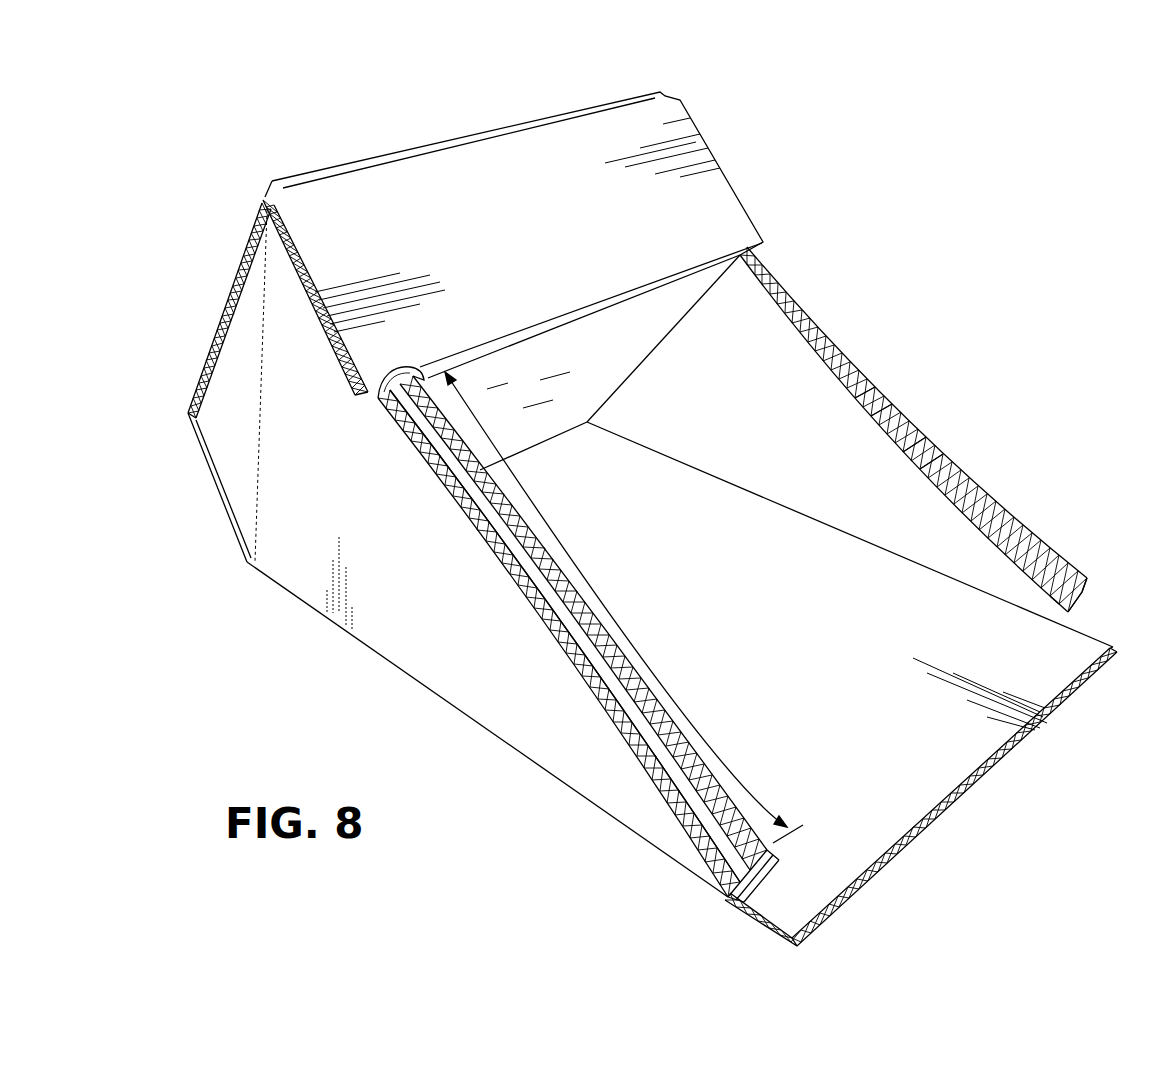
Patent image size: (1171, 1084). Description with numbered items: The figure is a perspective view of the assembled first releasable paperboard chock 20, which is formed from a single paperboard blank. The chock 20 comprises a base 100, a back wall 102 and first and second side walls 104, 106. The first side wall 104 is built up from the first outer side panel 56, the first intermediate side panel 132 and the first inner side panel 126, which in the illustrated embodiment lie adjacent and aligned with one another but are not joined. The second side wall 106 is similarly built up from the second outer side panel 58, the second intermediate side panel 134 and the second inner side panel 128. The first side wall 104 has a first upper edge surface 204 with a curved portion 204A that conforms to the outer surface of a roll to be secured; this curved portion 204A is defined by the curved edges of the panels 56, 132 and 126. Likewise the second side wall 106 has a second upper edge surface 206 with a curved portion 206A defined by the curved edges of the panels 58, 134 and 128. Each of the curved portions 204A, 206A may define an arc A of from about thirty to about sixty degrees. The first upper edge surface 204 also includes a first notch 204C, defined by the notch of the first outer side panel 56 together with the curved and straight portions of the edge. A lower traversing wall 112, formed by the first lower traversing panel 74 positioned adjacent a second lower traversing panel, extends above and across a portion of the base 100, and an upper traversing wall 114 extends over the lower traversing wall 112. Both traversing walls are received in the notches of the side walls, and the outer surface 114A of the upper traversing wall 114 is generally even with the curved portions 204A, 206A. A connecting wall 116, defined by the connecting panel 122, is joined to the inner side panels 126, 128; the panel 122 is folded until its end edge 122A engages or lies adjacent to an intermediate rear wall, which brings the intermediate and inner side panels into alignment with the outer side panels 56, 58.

The first releasable paperboard chock 20 is at (1057, 492).
The first outer side panel 56 is at (592, 768).
The second outer side panel 58 is at (807, 307).
The first lower traversing panel 74 is at (310, 303).
The base 100 is at (963, 747).
The back wall 102 is at (227, 450).
The first side wall 104 is at (613, 833).
The second side wall 106 is at (927, 397).
The lower traversing wall 112 is at (333, 340).
The upper traversing wall 114 is at (678, 140).
The outer surface of the upper traversing wall 114A is at (497, 175).
The connecting wall 116 is at (650, 310).
The connecting panel 122 is at (560, 360).
The end edge of the connecting panel 122A is at (540, 445).
The first inner side panel 126 is at (543, 580).
The second inner side panel 128 is at (1037, 580).
The first intermediate side panel 132 is at (513, 563).
The second intermediate side panel 134 is at (890, 397).
The first upper edge surface 204 is at (567, 665).
The curved portion of the first upper edge surface 204A is at (702, 808).
The first notch 204C is at (372, 385).
The second upper edge surface 206 is at (888, 393).
The curved portion of the second upper edge surface 206A is at (940, 448).
The arc A is at (624, 607).